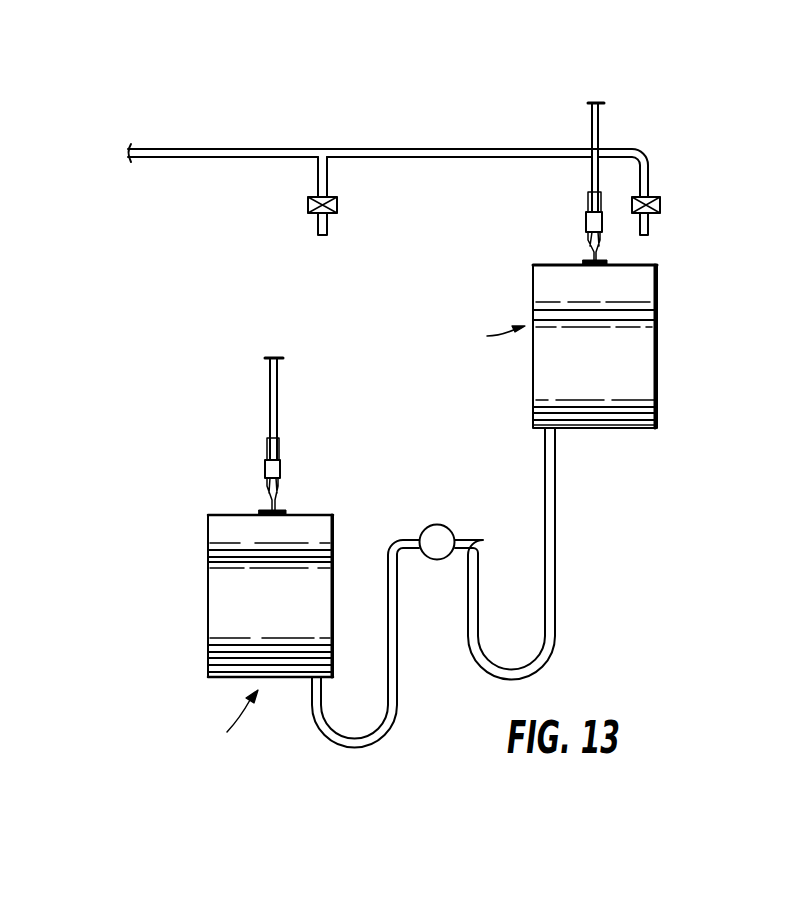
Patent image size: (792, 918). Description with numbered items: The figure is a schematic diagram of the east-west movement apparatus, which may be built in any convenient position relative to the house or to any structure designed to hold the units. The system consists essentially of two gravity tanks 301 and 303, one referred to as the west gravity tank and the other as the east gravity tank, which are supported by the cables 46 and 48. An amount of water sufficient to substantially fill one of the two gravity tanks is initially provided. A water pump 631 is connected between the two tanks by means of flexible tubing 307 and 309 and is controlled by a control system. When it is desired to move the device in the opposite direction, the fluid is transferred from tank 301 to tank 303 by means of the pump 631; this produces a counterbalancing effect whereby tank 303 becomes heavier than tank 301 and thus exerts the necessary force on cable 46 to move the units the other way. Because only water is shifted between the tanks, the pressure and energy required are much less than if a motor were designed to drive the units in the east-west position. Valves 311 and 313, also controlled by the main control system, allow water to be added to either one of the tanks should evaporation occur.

The cable 46 is at (598, 126).
The cable 48 is at (299, 430).
The gravity tank 301 is at (208, 555).
The gravity tank 303 is at (657, 329).
The flexible tubing 307 is at (397, 640).
The flexible tubing 309 is at (555, 505).
The valve 311 is at (337, 205).
The valve 313 is at (660, 206).
The water pump 631 is at (452, 533).